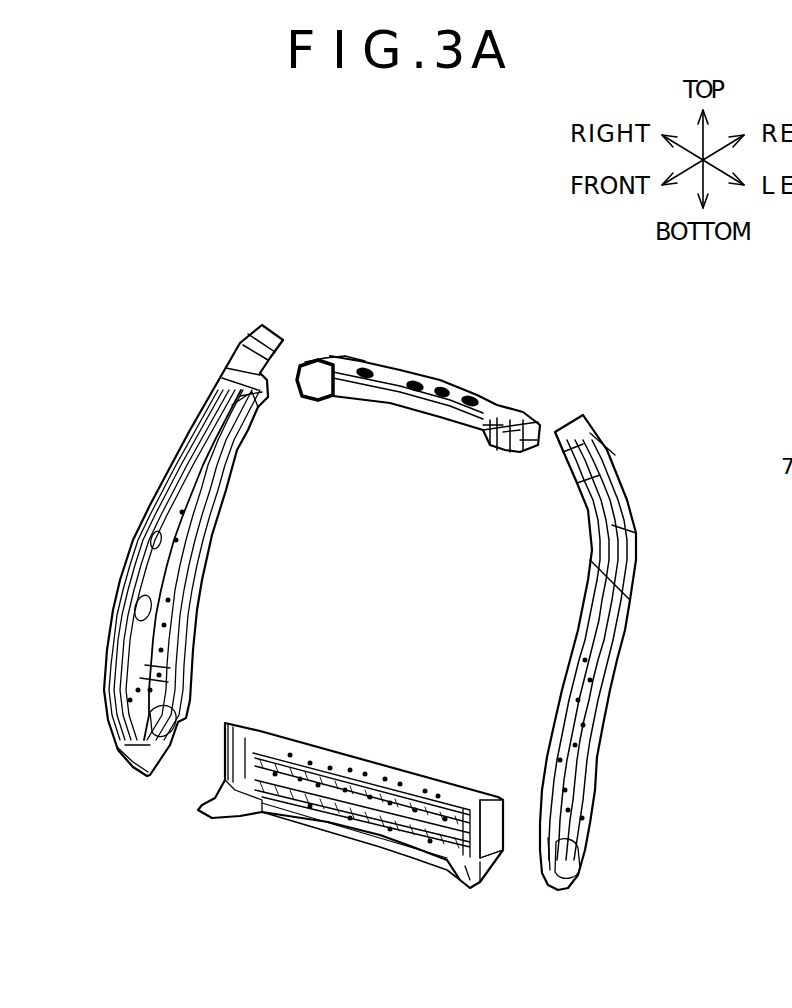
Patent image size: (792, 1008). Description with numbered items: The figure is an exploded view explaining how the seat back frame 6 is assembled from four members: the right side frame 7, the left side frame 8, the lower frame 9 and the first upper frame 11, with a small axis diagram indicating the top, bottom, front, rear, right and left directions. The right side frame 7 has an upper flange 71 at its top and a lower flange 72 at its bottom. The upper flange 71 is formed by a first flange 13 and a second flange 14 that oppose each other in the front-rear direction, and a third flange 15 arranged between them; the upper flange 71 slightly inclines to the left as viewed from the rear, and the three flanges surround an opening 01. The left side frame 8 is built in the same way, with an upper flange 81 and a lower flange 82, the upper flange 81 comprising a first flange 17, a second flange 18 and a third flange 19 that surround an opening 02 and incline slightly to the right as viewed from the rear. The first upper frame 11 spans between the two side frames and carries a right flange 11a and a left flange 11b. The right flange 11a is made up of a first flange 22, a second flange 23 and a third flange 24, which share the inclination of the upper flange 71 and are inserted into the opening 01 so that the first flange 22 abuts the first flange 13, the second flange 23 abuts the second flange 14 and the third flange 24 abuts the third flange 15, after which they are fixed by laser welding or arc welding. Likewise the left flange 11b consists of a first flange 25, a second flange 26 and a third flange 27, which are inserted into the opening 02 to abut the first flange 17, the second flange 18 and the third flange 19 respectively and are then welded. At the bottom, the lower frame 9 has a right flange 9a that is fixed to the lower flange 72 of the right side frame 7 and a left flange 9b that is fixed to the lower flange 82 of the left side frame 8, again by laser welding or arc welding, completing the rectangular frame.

The seat back frame 6 is at (471, 153).
The right side frame 7 is at (150, 508).
The left side frame 8 is at (578, 568).
The lower frame 9 is at (370, 762).
The right flange 9a is at (228, 723).
The left flange 9b is at (490, 793).
The first upper frame 11 is at (390, 370).
The right flange 11a is at (400, 268).
The left flange 11b is at (567, 322).
The first flange 13 is at (232, 366).
The second flange 14 is at (263, 328).
The third flange 15 is at (245, 338).
The first flange 17 is at (567, 455).
The second flange 18 is at (579, 410).
The third flange 19 is at (590, 433).
The first flange 22 is at (355, 362).
The second flange 23 is at (337, 350).
The third flange 24 is at (320, 363).
The first flange 25 is at (491, 421).
The second flange 26 is at (525, 440).
The third flange 27 is at (511, 431).
The upper flange 71 is at (133, 352).
The lower flange 72 is at (169, 772).
The upper flange 81 is at (664, 316).
The lower flange 82 is at (596, 831).
The opening 01 is at (256, 412).
The opening 02 is at (556, 458).